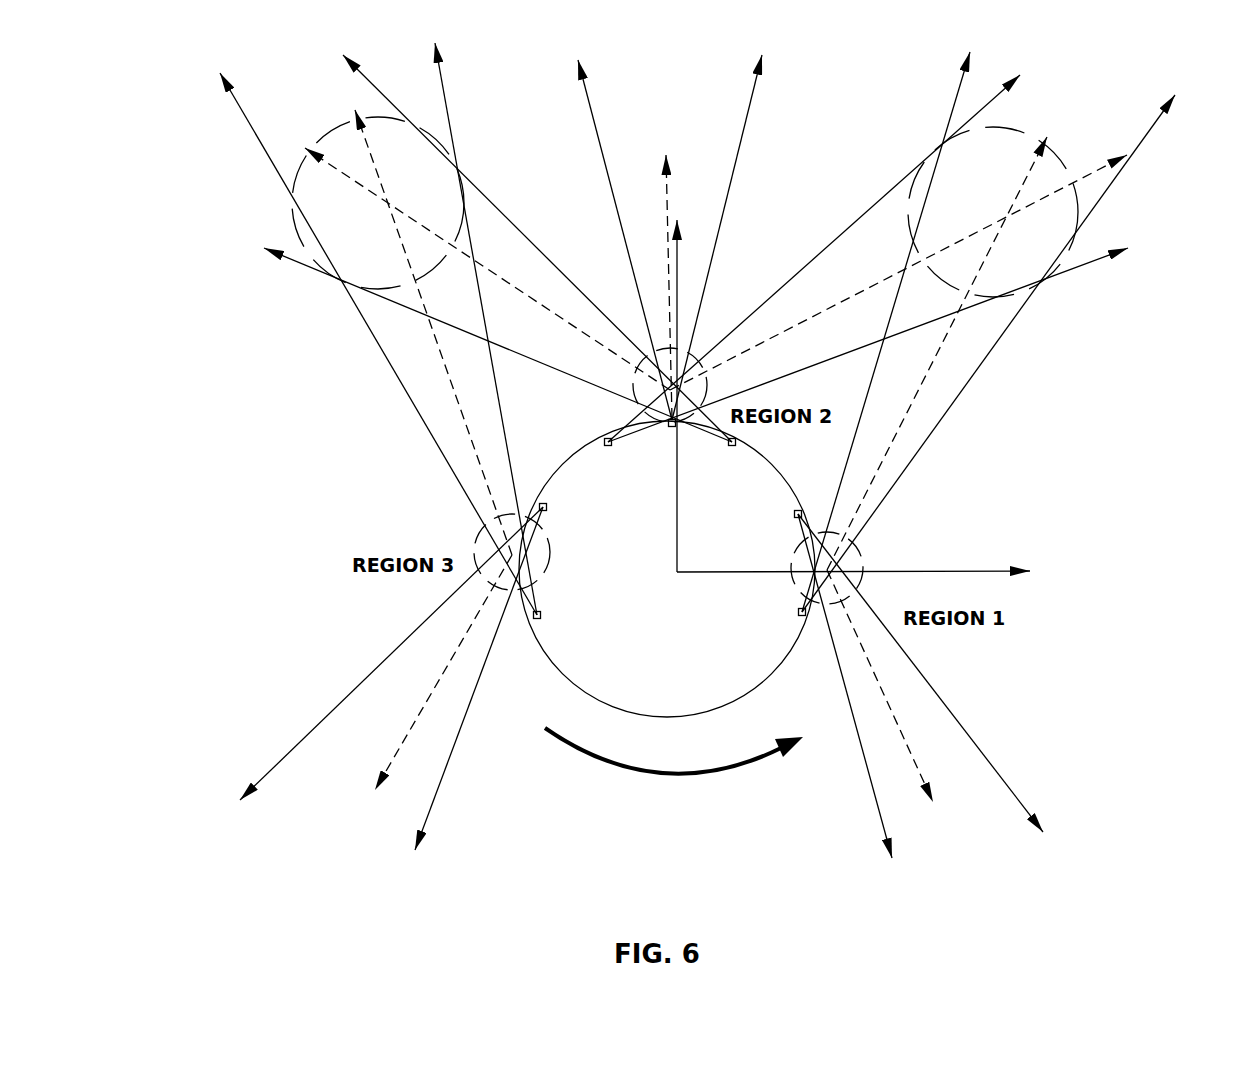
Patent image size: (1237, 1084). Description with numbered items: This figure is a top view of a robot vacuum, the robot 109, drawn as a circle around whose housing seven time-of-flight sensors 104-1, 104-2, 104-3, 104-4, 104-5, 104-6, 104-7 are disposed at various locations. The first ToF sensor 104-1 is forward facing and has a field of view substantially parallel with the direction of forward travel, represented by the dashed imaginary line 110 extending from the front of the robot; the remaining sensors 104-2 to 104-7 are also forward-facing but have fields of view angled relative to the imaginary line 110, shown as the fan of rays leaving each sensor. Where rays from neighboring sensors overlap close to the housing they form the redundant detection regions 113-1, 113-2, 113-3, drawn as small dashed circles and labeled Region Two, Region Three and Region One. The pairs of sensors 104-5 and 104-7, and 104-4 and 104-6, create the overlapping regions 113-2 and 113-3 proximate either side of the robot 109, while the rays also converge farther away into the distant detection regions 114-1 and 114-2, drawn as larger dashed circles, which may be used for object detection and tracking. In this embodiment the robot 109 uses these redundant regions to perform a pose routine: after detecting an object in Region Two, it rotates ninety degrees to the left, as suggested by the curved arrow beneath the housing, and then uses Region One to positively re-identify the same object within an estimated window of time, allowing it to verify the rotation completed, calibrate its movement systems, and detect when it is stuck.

The robot 109 is at (591, 435).
The imaginary line 110 is at (667, 221).
The detection region 113-1 is at (656, 355).
The detection region 113-2 is at (475, 552).
The detection region 113-3 is at (861, 561).
The detection region 114-1 is at (378, 249).
The detection region 114-2 is at (1001, 207).
The ToF sensor 104-1 is at (672, 427).
The ToF sensor 104-2 is at (732, 446).
The ToF sensor 104-3 is at (608, 446).
The ToF sensor 104-4 is at (794, 516).
The ToF sensor 104-5 is at (545, 511).
The ToF sensor 104-6 is at (798, 614).
The ToF sensor 104-7 is at (540, 619).